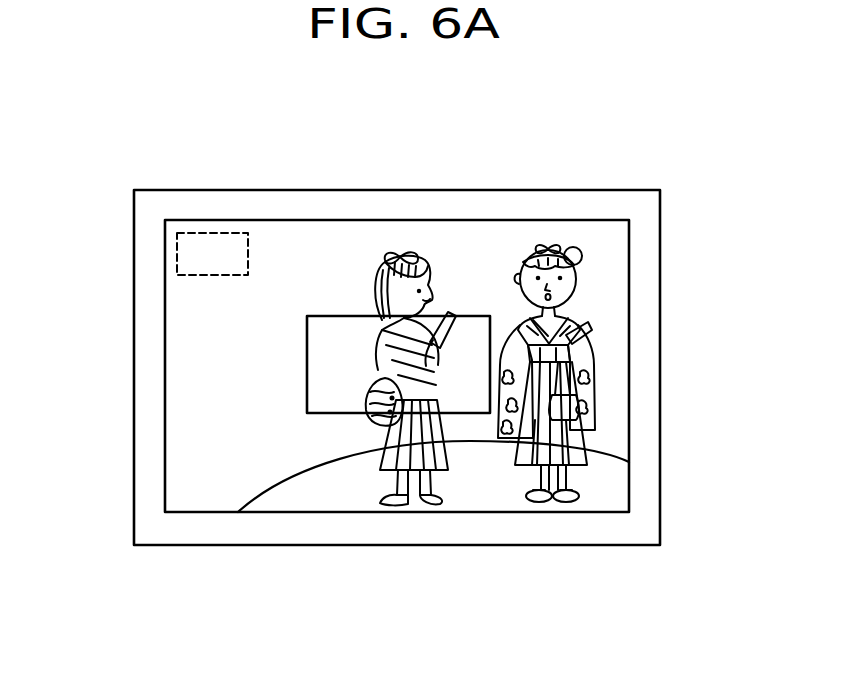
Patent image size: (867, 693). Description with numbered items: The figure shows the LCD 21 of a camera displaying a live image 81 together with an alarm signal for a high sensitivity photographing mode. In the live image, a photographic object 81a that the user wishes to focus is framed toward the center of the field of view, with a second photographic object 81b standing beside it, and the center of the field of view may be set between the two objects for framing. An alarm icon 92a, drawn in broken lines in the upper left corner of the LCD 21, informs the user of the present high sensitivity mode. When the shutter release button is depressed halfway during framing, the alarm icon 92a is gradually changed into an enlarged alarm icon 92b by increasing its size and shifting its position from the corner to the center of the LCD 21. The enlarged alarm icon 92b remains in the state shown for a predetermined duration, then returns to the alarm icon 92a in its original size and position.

The LCD 21 is at (485, 190).
The captured image 81 is at (620, 292).
The photographic object 81a is at (399, 250).
The photographic object 81b is at (545, 244).
The alarm icon 92a is at (177, 252).
The enlarged alarm icon 92b is at (307, 366).